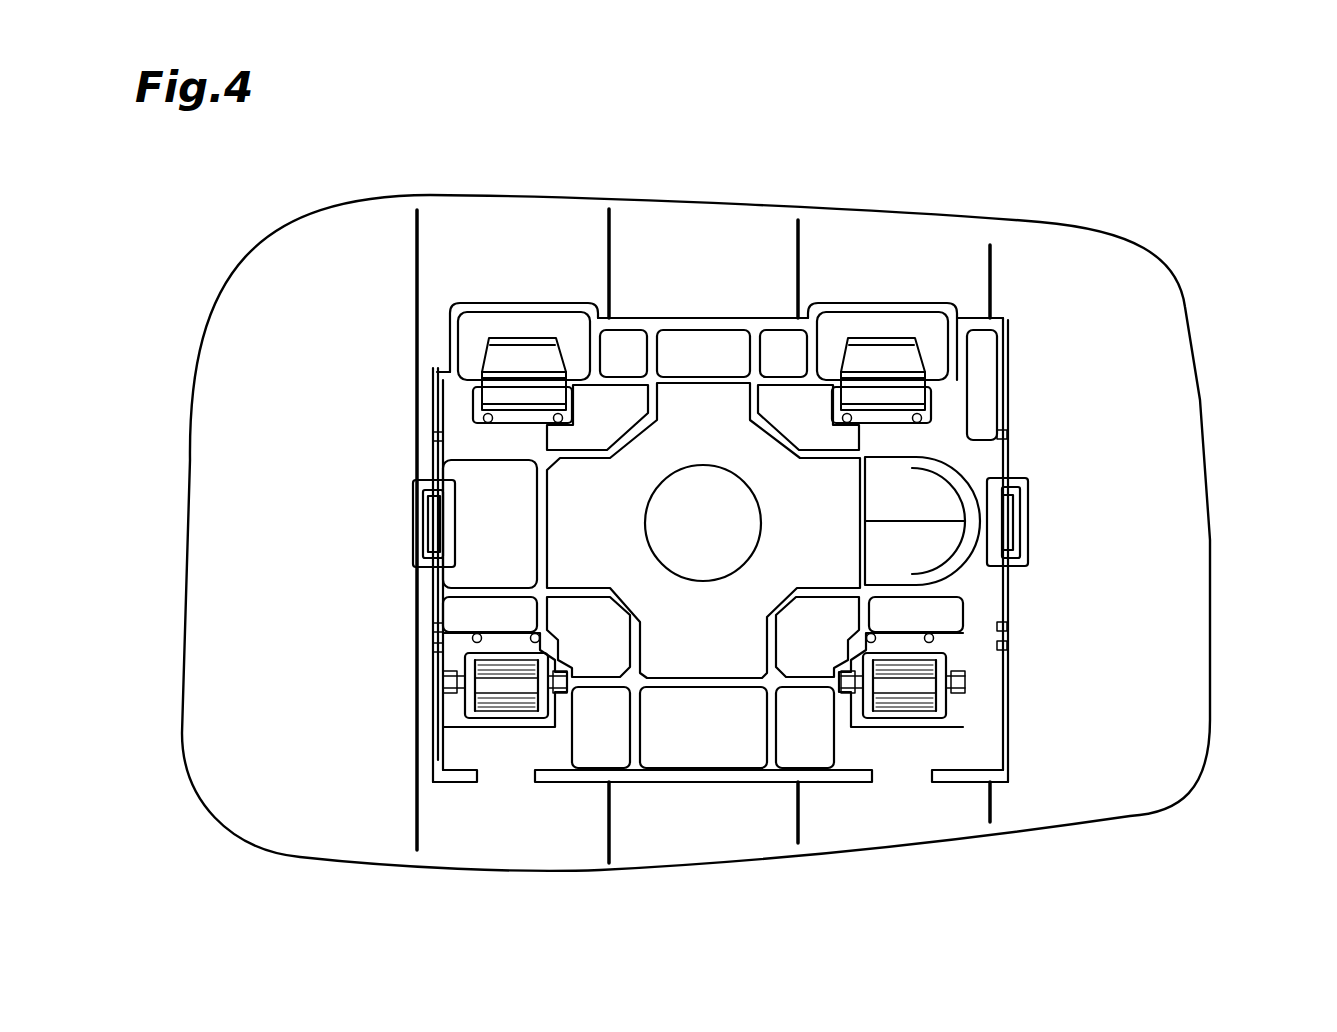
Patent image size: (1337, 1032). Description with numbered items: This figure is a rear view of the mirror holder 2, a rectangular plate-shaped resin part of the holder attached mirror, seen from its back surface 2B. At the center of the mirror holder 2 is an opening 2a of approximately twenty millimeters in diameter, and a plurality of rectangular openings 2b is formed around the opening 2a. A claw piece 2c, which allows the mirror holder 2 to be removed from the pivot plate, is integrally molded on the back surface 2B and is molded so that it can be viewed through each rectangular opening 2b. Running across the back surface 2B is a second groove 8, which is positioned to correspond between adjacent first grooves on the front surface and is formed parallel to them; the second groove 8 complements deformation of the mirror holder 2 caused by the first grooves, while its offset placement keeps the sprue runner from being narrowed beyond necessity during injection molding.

The mirror holder 2 is at (1044, 214).
The back surface 2B is at (1167, 538).
The opening 2a is at (743, 520).
The rectangular opening 2b is at (833, 326).
The claw piece 2c is at (523, 358).
The second groove 8 is at (417, 283).